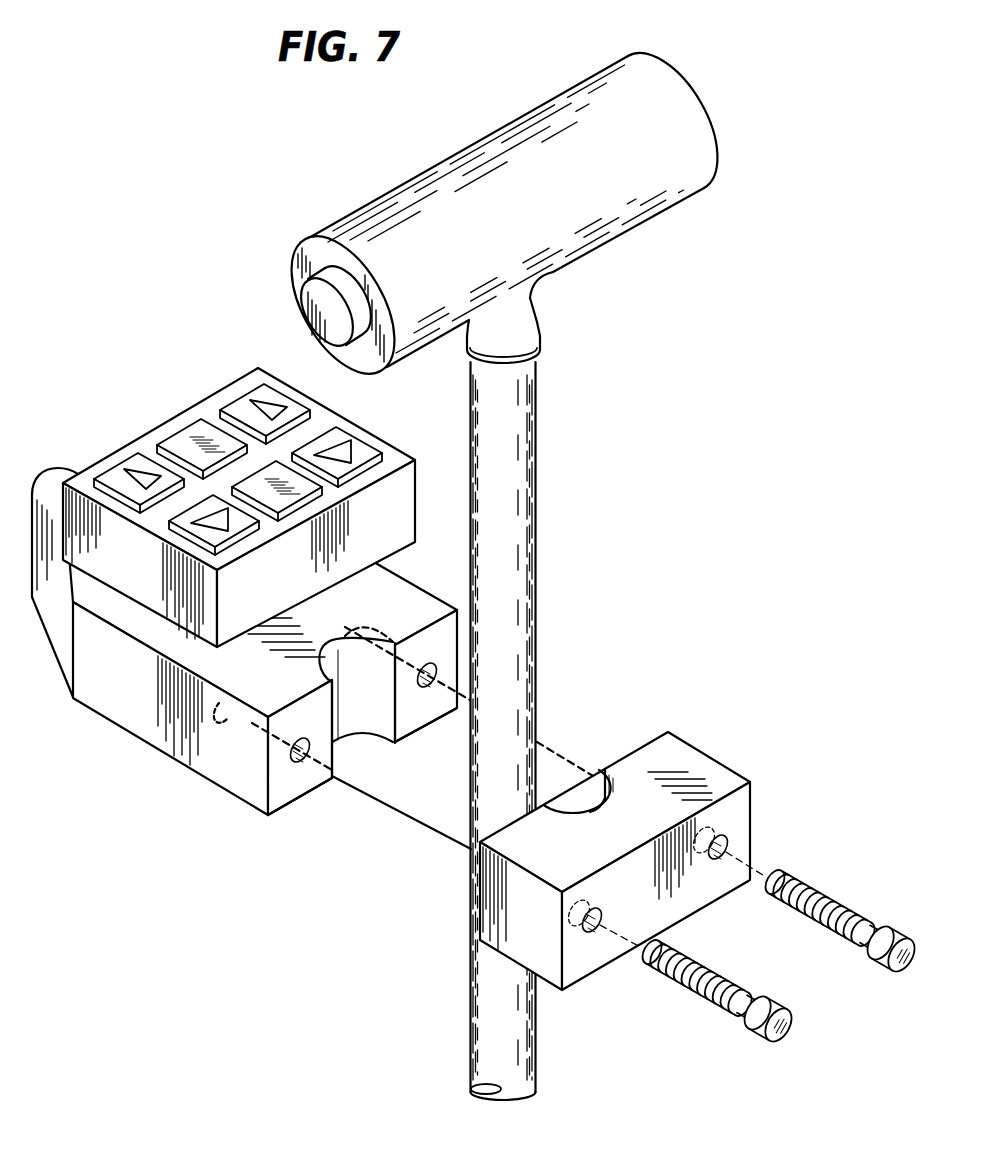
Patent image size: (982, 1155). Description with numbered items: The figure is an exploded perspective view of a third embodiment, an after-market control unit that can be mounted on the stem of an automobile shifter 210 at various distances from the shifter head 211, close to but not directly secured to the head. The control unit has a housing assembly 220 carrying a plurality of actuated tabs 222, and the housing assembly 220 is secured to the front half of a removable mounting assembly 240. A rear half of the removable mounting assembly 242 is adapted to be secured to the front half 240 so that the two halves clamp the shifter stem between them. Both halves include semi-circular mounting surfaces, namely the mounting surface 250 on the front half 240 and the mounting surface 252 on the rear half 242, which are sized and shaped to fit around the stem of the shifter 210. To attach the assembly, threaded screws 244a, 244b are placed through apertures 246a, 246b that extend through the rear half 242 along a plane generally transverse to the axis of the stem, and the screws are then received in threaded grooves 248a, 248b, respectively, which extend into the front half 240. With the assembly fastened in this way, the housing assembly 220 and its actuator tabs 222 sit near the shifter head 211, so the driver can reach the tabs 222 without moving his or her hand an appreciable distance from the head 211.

The shifter 210 is at (727, 91).
The shifter head 211 is at (648, 200).
The housing assembly 220 is at (158, 571).
The actuated tabs 222 is at (133, 455).
The front half of removable mounting assembly 240 is at (158, 728).
The rear half of removable mounting assembly 242 is at (697, 762).
The threaded screw 244a is at (878, 968).
The threaded screw 244b is at (712, 1006).
The aperture 246a is at (742, 834).
The aperture 246b is at (615, 907).
The threaded groove 248a is at (428, 688).
The threaded groove 248b is at (302, 762).
The semi-circular mounting surface 250 is at (386, 712).
The semi-circular mounting surface 252 is at (588, 806).